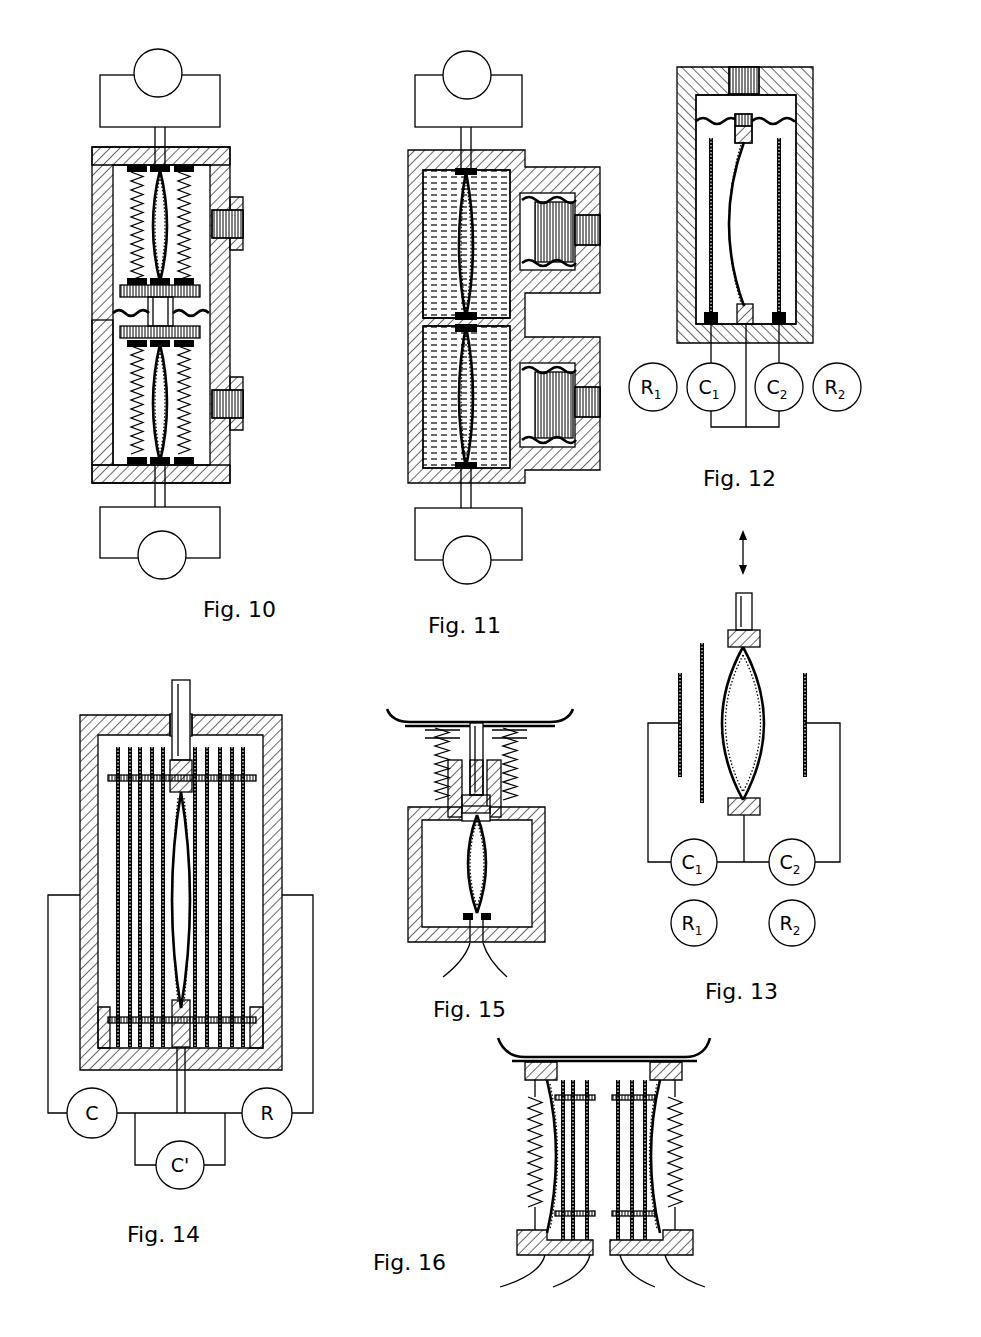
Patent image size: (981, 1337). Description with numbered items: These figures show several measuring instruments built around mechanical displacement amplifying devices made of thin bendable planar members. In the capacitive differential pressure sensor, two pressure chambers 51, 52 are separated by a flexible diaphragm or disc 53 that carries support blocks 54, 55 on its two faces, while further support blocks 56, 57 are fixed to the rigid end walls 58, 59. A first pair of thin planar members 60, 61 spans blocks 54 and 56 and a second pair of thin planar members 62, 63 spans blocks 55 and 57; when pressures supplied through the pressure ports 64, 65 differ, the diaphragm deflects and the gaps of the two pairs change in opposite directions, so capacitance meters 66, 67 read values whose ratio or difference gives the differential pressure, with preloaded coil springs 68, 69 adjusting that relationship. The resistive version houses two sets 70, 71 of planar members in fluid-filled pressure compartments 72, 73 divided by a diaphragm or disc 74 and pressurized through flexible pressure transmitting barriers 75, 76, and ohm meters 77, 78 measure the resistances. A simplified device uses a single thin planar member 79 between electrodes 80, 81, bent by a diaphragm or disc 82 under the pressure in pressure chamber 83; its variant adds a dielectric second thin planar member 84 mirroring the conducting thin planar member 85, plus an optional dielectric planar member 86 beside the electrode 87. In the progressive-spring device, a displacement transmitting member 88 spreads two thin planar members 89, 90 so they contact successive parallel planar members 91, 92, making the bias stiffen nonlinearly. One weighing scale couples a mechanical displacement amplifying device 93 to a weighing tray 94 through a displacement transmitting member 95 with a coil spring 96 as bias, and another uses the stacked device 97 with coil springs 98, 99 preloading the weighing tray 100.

In FIG. 10, the pressure chamber 51 is at (118, 236).
In FIG. 10, the pressure chamber 52 is at (118, 412).
In FIG. 10, the flexible diaphragm or disc 53 is at (120, 313).
In FIG. 10, the support block 54 is at (128, 288).
In FIG. 10, the support block 55 is at (135, 362).
In FIG. 10, the support block 56 is at (190, 190).
In FIG. 10, the support block 57 is at (200, 440).
In FIG. 10, the rigid end wall 58 is at (215, 147).
In FIG. 10, the rigid end wall 59 is at (215, 483).
In FIG. 10, the thin planar member 60 is at (135, 205).
In FIG. 10, the thin planar member 61 is at (170, 222).
In FIG. 10, the thin planar member 62 is at (140, 440).
In FIG. 10, the thin planar member 63 is at (170, 402).
In FIG. 10, the pressure port 64 is at (243, 225).
In FIG. 10, the pressure port 65 is at (243, 405).
In FIG. 10, the capacitance meter 66 is at (137, 62).
In FIG. 10, the capacitance meter 67 is at (140, 566).
In FIG. 10, the preloaded coil spring 68 is at (175, 302).
In FIG. 10, the preloaded coil spring 69 is at (190, 362).
In FIG. 11, the set of thin planar members 70 is at (462, 242).
In FIG. 11, the set of thin planar members 71 is at (462, 386).
In FIG. 11, the pressure compartment 72 is at (430, 200).
In FIG. 11, the pressure compartment 73 is at (430, 442).
In FIG. 11, the flexible diaphragm or disc 74 is at (430, 302).
In FIG. 11, the flexible pressure transmitting barrier 75 is at (565, 167).
In FIG. 11, the flexible pressure transmitting barrier 76 is at (552, 470).
In FIG. 11, the ohm meter 77 is at (490, 70).
In FIG. 11, the ohm meter 78 is at (490, 572).
In FIG. 12, the single thin planar member with stiffness 79 is at (733, 220).
In FIG. 12, the electrode 80 is at (711, 265).
In FIG. 12, the electrode 81 is at (779, 265).
In FIG. 12, the diaphragm or disc 82 is at (768, 121).
In FIG. 12, the pressure chamber 83 is at (760, 103).
In FIG. 13, the second thin planar member 84 is at (758, 677).
In FIG. 13, the thin planar member 85 is at (737, 660).
In FIG. 13, the dielectric planar member 86 is at (700, 648).
In FIG. 13, the electrode 87 is at (680, 690).
In FIG. 14, the displacement transmitting member 88 is at (172, 700).
In FIG. 14, the thin planar member 89 is at (150, 805).
In FIG. 14, the thin planar member 90 is at (200, 805).
In FIG. 14, the planar members 91 is at (140, 752).
In FIG. 14, the planar members 92 is at (225, 752).
In FIG. 15, the mechanical displacement amplifying device 93 is at (493, 866).
In FIG. 15, the weighing tray 94 is at (478, 722).
In FIG. 15, the displacement transmitting member 95 is at (515, 752).
In FIG. 15, the coil spring 96 is at (435, 765).
In FIG. 16, the mechanical displacement amplifying device 97 is at (605, 1150).
In FIG. 16, the coil spring 98 is at (528, 1160).
In FIG. 16, the coil spring 99 is at (682, 1165).
In FIG. 16, the weighing tray 100 is at (607, 1057).